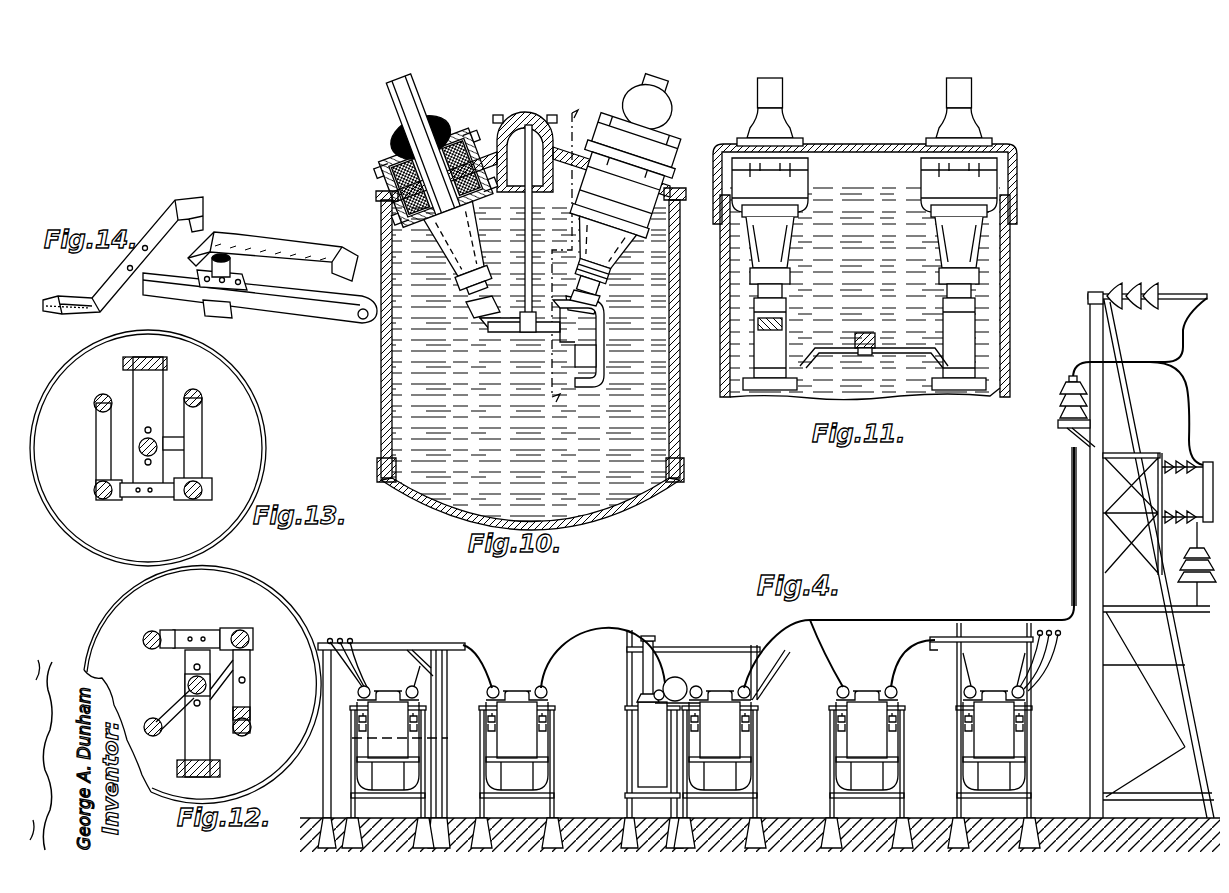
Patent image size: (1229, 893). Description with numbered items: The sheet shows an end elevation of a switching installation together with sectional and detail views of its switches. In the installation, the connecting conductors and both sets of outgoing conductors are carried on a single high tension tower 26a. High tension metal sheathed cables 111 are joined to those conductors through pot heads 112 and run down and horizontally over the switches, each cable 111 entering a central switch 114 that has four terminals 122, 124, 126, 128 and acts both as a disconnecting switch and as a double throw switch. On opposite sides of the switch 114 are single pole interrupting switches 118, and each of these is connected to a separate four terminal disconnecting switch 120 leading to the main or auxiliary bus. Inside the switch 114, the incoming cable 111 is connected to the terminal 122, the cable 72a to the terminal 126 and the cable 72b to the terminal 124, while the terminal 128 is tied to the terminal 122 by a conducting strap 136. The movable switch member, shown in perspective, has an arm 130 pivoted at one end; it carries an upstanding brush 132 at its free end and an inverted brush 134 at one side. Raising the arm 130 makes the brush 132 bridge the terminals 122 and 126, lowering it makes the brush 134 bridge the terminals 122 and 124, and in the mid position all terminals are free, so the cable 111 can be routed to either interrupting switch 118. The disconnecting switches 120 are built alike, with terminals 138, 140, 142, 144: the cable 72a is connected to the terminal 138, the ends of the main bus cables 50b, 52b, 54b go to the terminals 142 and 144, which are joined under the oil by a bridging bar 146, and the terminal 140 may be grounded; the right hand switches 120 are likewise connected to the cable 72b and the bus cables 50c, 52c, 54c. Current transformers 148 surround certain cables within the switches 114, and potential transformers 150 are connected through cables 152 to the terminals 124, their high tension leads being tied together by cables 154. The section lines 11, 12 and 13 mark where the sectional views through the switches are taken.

In FIG. 10, the section line 11 is at (566, 258).
In FIG. 10, the section line 12 is at (655, 297).
In FIG. 4, the section line 13 is at (404, 739).
In FIG. 4, the high tension tower 26a is at (1090, 330).
In FIG. 4, the main bus cable 50b is at (430, 618).
In FIG. 4, the main bus cable 52b is at (343, 640).
In FIG. 4, the main bus cable 54b is at (330, 640).
In FIG. 4, the bus cable 50c is at (1040, 632).
In FIG. 4, the bus cable 52c is at (1049, 632).
In FIG. 4, the bus cable 54c is at (1061, 634).
In FIG. 10, the cable 72a is at (407, 106).
In FIG. 4, the cable 72a is at (636, 624).
In FIG. 4, the cable 72b is at (832, 668).
In FIG. 10, the high tension metal sheathed cable 111 is at (668, 92).
In FIG. 11, the high tension metal sheathed cable 111 is at (777, 100).
In FIG. 4, the high tension metal sheathed cable 111 is at (1071, 494).
In FIG. 4, the pot head 112 is at (1061, 391).
In FIG. 10, the central switch 114 is at (580, 152).
In FIG. 11, the central switch 114 is at (847, 143).
In FIG. 4, the central switch 114 is at (702, 820).
In FIG. 4, the single pole switch 118 is at (518, 712).
In FIG. 4, the four terminal disconnecting switch 120 is at (395, 775).
In FIG. 12, the terminal 122 is at (241, 630).
In FIG. 10, the terminal 122 is at (603, 290).
In FIG. 11, the terminal 122 is at (767, 293).
In FIG. 4, the terminal 122 is at (745, 692).
In FIG. 12, the terminal 124 is at (252, 727).
In FIG. 4, the terminal 124 is at (836, 692).
In FIG. 12, the terminal 126 is at (143, 639).
In FIG. 10, the terminal 126 is at (482, 302).
In FIG. 4, the terminal 126 is at (697, 688).
In FIG. 12, the terminal 128 is at (157, 735).
In FIG. 12, the arm 130 is at (205, 743).
In FIG. 14, the bridging member or brush 132 is at (167, 214).
In FIG. 12, the bridging member or brush 132 is at (208, 630).
In FIG. 10, the bridging member or brush 132 is at (490, 324).
In FIG. 11, the bridging member or brush 132 is at (767, 326).
In FIG. 14, the inverted brush 134 is at (322, 250).
In FIG. 12, the inverted brush 134 is at (250, 663).
In FIG. 10, the inverted brush 134 is at (660, 356).
In FIG. 11, the inverted brush 134 is at (843, 350).
In FIG. 12, the conducting strap 136 is at (183, 698).
In FIG. 13, the terminal 138 is at (190, 500).
In FIG. 13, the terminal 140 is at (203, 400).
In FIG. 13, the terminal 142 is at (105, 500).
In FIG. 13, the terminal 144 is at (103, 394).
In FIG. 13, the bridging bar 146 is at (97, 437).
In FIG. 10, the current transformer 148 is at (465, 145).
In FIG. 4, the potential transformer 150 is at (652, 742).
In FIG. 4, the cable 152 is at (678, 676).
In FIG. 4, the cable 154 is at (648, 672).